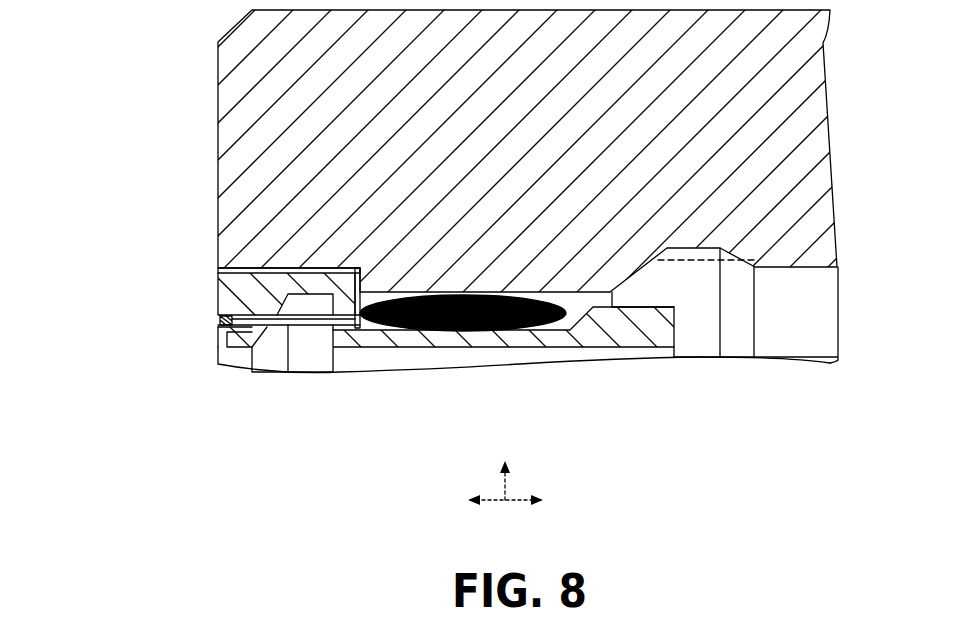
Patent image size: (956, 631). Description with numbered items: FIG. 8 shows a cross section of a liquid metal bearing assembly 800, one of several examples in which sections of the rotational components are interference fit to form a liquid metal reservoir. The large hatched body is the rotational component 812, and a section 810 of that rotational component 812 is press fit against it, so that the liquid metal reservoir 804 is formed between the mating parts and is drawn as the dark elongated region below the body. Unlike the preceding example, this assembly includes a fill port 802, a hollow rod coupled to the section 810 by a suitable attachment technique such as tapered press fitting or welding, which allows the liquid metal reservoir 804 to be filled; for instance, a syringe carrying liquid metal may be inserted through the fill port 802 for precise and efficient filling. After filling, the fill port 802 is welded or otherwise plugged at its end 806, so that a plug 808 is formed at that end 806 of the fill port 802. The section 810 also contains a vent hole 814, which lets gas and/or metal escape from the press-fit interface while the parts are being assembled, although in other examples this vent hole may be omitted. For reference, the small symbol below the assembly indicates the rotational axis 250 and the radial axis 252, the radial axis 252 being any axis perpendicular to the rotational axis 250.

The liquid metal bearing assembly 800 is at (478, 200).
The rotational component 812 is at (158, 94).
The section 810 is at (213, 279).
The fill port 802 is at (277, 319).
The vent hole 814 is at (343, 275).
The liquid metal reservoir 804 is at (375, 325).
The end 806 is at (213, 322).
The plug 808 is at (225, 352).
The rotational axis 250 is at (528, 503).
The radial axis 252 is at (508, 486).